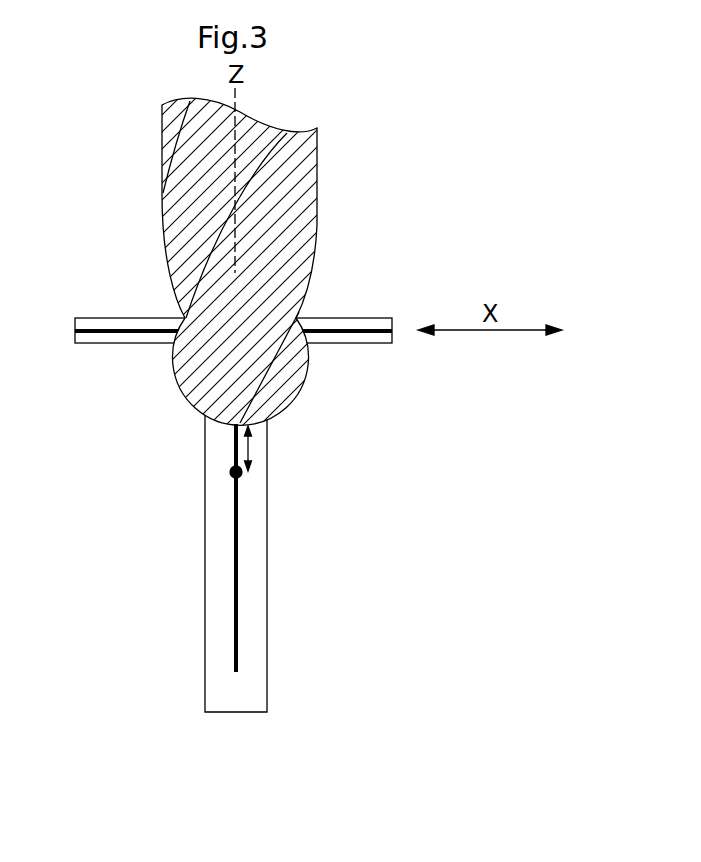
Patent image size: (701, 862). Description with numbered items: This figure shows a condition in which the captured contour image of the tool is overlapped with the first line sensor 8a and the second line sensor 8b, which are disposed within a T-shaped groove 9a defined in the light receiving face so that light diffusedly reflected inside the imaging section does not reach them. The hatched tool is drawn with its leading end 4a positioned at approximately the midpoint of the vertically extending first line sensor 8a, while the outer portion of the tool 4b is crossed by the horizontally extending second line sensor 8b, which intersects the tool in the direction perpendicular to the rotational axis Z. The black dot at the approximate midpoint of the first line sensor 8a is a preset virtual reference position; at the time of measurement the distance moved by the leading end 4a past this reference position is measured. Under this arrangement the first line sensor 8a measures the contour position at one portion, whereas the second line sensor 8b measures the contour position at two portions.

The leading end 4a is at (233, 426).
The outer peripheral portion of rotary tool 4b is at (307, 288).
The first line sensor 8a is at (237, 637).
The second line sensor 8b is at (352, 325).
The T-shaped groove 9a is at (268, 521).